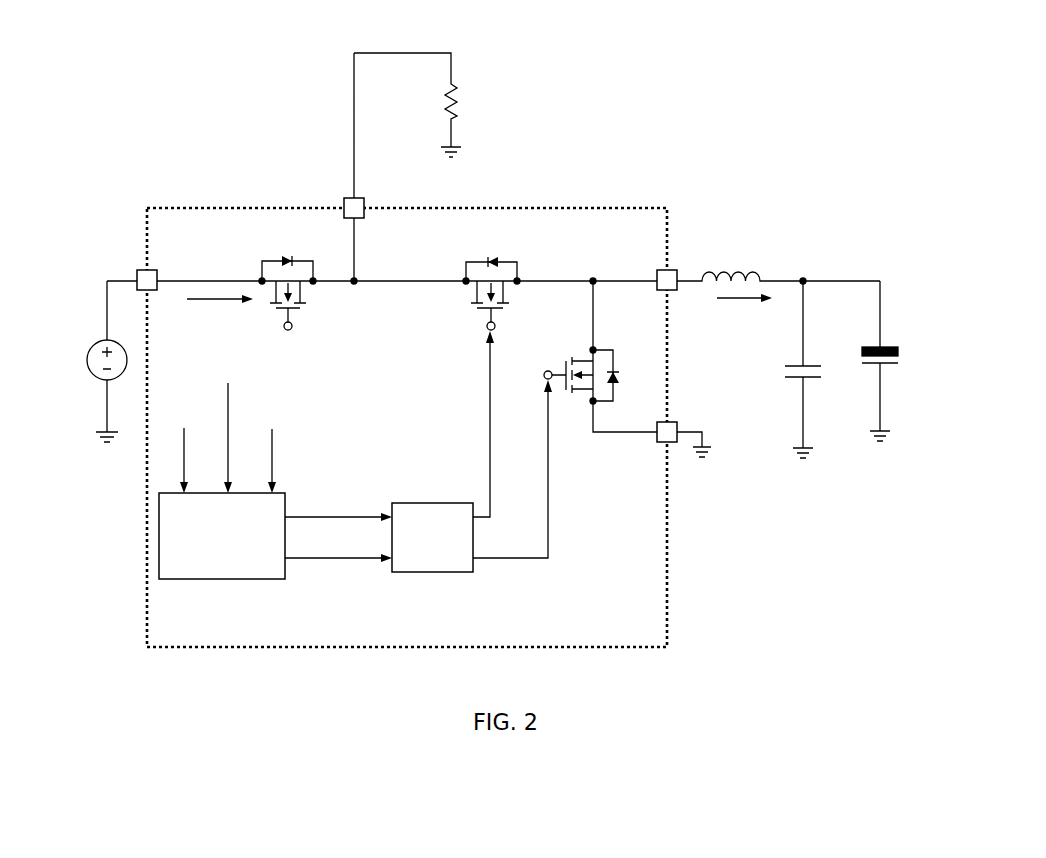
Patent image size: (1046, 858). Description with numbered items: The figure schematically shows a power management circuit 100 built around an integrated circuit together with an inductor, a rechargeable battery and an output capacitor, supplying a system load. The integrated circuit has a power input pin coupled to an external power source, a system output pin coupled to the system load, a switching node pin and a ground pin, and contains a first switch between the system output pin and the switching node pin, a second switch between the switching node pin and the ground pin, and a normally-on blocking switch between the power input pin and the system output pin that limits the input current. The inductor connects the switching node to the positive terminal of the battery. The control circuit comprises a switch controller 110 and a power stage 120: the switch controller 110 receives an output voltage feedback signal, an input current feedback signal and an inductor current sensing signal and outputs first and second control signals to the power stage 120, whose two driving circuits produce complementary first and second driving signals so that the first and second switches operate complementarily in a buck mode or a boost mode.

The power management circuit 100 is at (502, 328).
The switch controller 110 is at (217, 580).
The power stage 120 is at (428, 572).